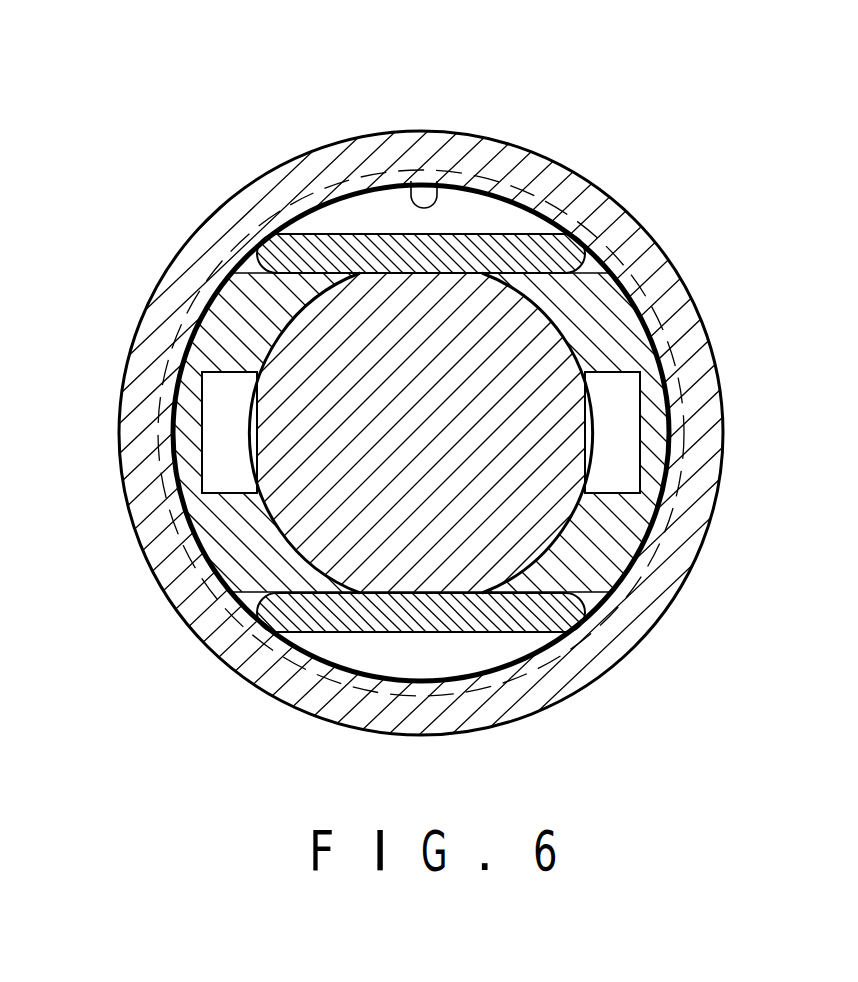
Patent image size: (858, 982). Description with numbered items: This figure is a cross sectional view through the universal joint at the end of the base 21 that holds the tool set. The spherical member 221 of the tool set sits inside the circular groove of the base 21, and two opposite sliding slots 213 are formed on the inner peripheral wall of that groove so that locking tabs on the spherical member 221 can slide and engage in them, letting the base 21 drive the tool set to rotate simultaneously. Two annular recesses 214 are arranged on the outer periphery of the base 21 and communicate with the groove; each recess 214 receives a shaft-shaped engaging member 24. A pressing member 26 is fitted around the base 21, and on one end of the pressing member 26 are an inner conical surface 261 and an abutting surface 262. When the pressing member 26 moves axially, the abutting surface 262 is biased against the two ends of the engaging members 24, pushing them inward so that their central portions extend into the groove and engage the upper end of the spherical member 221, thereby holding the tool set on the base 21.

The base 21 is at (610, 312).
The engaging member 24 is at (522, 253).
The pressing member 26 is at (693, 337).
The sliding slot 213 is at (615, 463).
The annular recess 214 is at (342, 217).
The spherical member 221 is at (543, 428).
The inner conical surface 261 is at (227, 252).
The abutting surface 262 is at (438, 183).